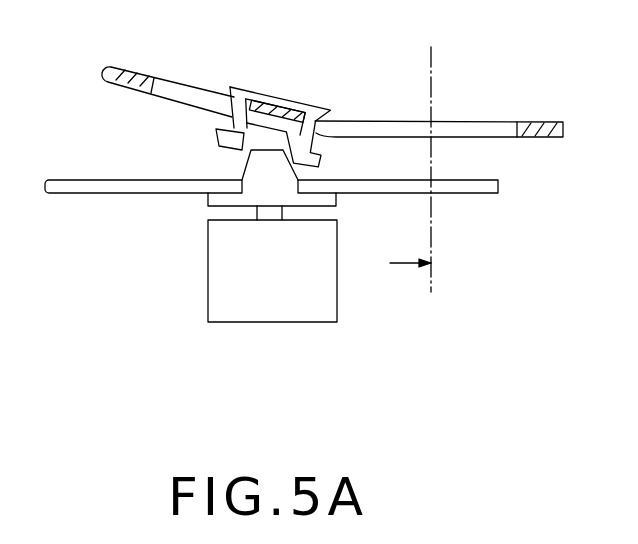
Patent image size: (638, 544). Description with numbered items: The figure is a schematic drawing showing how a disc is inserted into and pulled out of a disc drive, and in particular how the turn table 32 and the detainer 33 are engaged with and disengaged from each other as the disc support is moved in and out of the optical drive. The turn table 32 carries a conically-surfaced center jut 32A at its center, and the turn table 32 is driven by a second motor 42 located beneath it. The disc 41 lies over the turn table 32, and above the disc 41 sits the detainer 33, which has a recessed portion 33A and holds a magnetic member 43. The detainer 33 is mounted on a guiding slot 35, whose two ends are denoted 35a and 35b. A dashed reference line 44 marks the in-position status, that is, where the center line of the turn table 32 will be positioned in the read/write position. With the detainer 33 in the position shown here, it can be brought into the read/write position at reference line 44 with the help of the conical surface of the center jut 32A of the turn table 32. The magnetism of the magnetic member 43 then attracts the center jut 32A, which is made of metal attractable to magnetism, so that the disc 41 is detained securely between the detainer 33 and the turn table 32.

The turn table 32 is at (214, 201).
The center jut 32A is at (243, 170).
The detainer 33 is at (313, 108).
The recessed portion 33A is at (240, 131).
The guiding slot 35 is at (184, 82).
The end of guiding slot 35a is at (117, 66).
The end of guiding slot 35b is at (519, 121).
The disc 41 is at (77, 180).
The second motor 42 is at (207, 284).
The magnetic member 43 is at (255, 100).
The reference line 44 is at (432, 78).